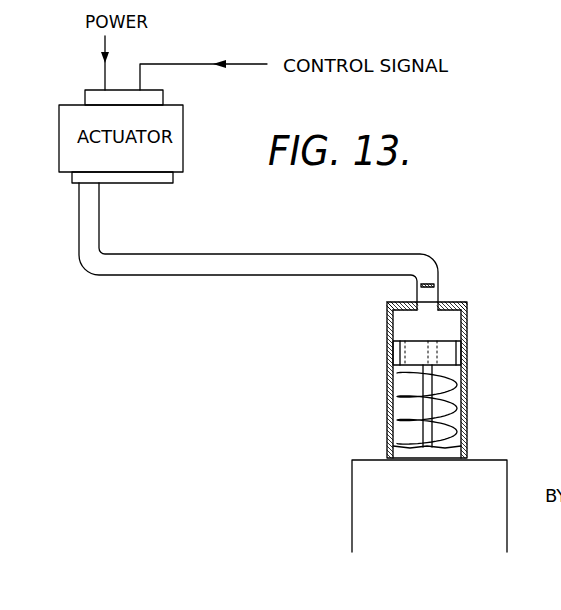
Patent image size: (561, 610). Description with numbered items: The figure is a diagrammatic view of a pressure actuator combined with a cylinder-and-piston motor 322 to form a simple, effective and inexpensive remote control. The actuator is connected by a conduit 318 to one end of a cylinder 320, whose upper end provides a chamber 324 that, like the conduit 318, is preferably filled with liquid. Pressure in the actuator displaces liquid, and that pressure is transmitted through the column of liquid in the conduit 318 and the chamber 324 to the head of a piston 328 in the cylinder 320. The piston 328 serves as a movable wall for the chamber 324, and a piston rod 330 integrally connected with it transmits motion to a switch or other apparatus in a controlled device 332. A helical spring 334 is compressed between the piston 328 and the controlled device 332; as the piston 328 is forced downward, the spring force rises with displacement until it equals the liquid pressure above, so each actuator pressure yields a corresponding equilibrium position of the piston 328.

The conduit 318 is at (85, 223).
The cylinder 320 is at (387, 330).
The cylinder-and-piston motor 322 is at (479, 304).
The chamber 324 is at (427, 323).
The piston 328 is at (467, 352).
The piston rod 330 is at (462, 402).
The controlled device 332 is at (360, 475).
The helical spring 334 is at (455, 434).